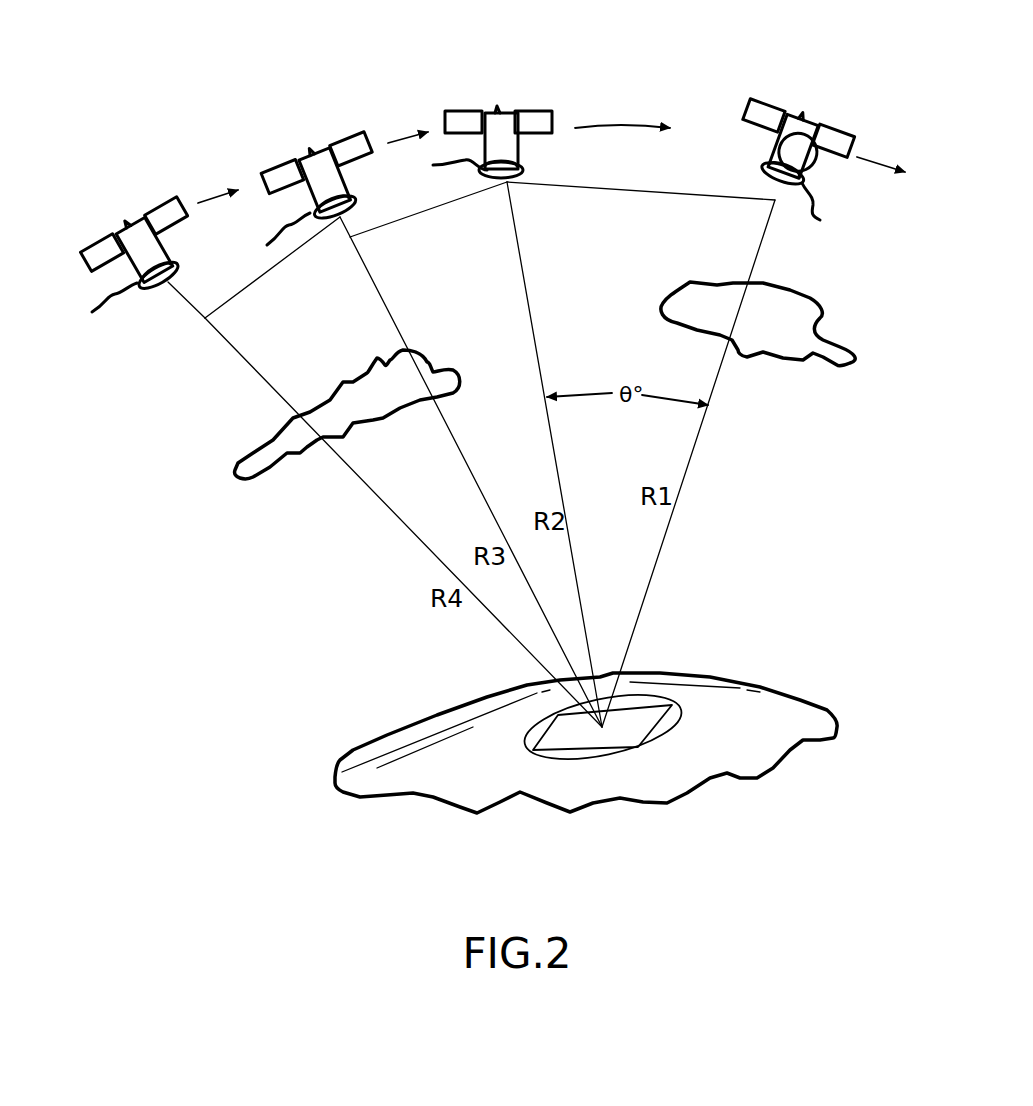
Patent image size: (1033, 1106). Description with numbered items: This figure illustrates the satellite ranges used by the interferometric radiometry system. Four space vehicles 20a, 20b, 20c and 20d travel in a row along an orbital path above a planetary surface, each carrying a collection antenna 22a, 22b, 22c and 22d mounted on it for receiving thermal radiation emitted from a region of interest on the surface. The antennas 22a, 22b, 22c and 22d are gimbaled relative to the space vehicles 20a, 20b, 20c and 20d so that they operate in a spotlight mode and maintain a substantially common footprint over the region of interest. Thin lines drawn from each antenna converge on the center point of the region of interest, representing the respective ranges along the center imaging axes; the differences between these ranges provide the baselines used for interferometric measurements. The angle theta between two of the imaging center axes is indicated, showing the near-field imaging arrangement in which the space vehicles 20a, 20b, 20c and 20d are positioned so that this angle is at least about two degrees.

The space vehicle 20a is at (825, 107).
The space vehicle 20b is at (502, 100).
The space vehicle 20c is at (282, 150).
The space vehicle 20d is at (108, 220).
The collection antenna 22a is at (838, 207).
The collection antenna 22b is at (440, 167).
The collection antenna 22c is at (270, 238).
The collection antenna 22d is at (101, 313).